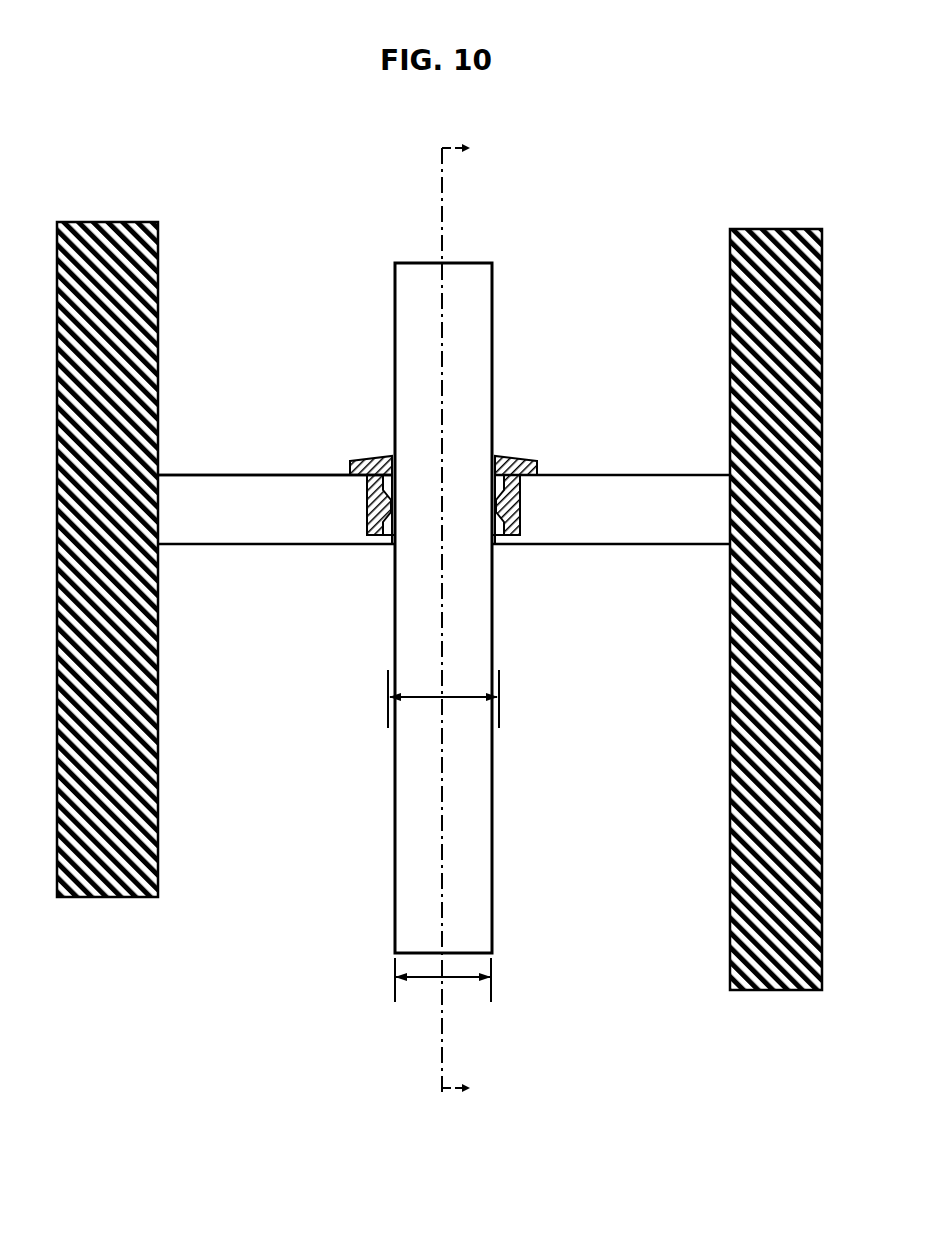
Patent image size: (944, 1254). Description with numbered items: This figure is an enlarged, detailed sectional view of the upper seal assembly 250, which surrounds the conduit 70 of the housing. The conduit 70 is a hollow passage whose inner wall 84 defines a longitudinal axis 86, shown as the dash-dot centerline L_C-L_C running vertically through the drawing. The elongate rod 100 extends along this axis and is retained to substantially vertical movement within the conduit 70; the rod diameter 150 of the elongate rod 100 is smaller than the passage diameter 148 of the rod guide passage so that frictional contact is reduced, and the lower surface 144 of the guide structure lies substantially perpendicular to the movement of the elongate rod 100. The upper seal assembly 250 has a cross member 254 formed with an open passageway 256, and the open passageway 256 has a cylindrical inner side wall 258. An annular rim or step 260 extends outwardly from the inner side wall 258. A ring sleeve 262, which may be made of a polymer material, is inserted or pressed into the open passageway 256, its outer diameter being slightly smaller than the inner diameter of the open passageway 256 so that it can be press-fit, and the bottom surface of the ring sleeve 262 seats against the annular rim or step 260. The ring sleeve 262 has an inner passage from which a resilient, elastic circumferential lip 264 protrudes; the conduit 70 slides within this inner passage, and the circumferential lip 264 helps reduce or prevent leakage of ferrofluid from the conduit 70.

The conduit 70 is at (633, 234).
The inner wall 84 is at (158, 810).
The longitudinal axis 86 is at (440, 158).
The elongate rod 100 is at (492, 398).
The lower surface 144 is at (680, 546).
The passage diameter 148 is at (388, 697).
The rod diameter 150 is at (491, 977).
The upper seal assembly 250 is at (426, 438).
The cross member 254 is at (236, 473).
The open passageway 256 is at (508, 555).
The cylindrical inner side wall 258 is at (520, 495).
The annular rim or step 260 is at (382, 540).
The ring sleeve 262 is at (366, 460).
The circumferential lip 264 is at (400, 507).